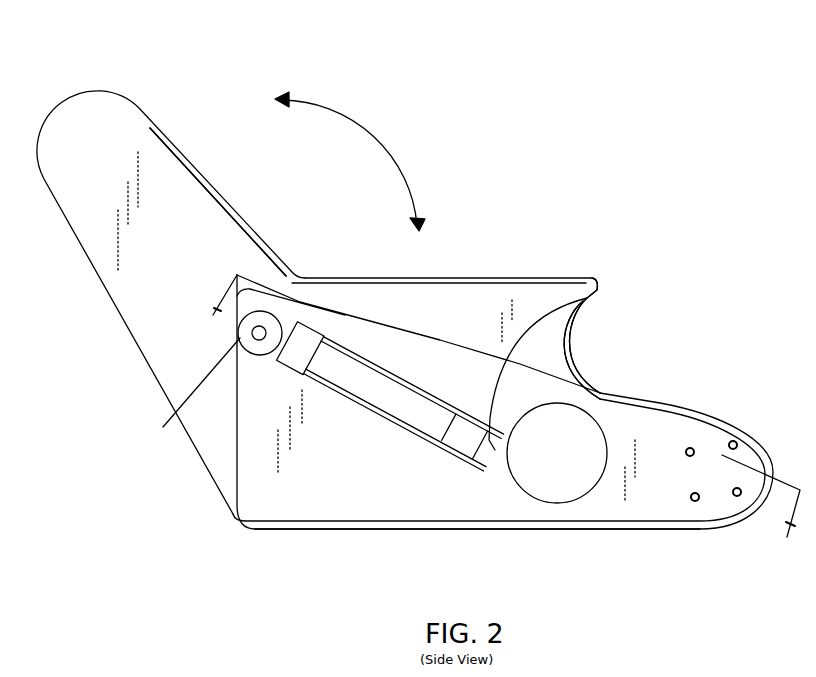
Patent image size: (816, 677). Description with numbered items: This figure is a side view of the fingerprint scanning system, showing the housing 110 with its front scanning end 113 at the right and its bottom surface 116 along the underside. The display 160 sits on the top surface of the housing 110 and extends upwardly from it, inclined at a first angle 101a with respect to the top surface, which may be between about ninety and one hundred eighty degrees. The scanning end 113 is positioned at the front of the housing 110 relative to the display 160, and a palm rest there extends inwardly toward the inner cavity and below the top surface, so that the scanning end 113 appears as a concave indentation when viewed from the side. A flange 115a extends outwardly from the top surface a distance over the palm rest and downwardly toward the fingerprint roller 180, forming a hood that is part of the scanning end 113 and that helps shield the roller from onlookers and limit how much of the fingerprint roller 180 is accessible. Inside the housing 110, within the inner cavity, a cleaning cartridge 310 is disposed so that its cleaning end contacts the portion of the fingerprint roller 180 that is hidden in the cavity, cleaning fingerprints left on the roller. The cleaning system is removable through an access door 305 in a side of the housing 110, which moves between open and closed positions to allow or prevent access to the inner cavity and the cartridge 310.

The housing 110 is at (72, 95).
The display 160 is at (212, 189).
The first angle 101a is at (373, 132).
The scanning end 113 is at (520, 327).
The flange 115a is at (574, 337).
The fingerprint roller 180 is at (590, 437).
The access door 305 is at (293, 463).
The cleaning cartridge 310 is at (427, 425).
The bottom surface 116 is at (580, 533).